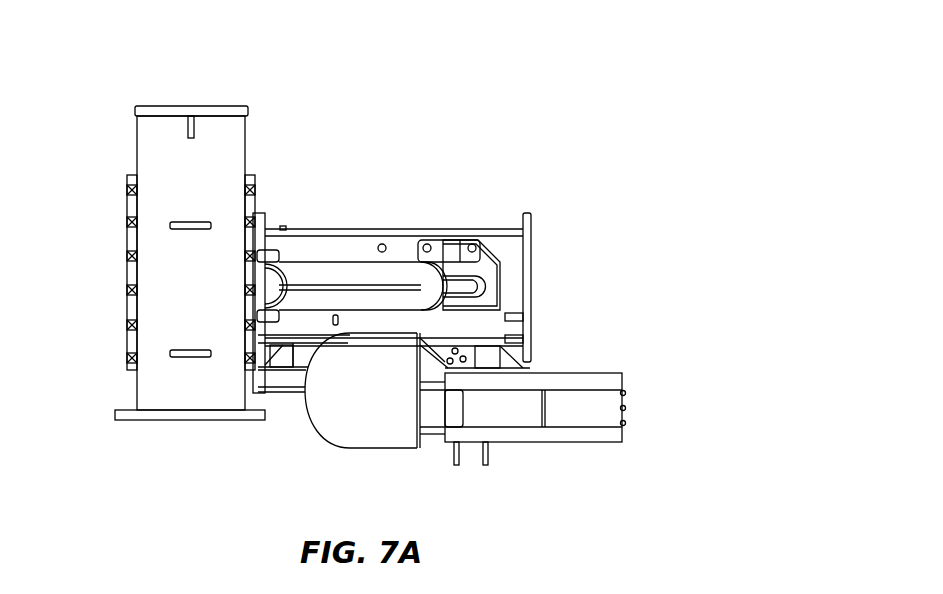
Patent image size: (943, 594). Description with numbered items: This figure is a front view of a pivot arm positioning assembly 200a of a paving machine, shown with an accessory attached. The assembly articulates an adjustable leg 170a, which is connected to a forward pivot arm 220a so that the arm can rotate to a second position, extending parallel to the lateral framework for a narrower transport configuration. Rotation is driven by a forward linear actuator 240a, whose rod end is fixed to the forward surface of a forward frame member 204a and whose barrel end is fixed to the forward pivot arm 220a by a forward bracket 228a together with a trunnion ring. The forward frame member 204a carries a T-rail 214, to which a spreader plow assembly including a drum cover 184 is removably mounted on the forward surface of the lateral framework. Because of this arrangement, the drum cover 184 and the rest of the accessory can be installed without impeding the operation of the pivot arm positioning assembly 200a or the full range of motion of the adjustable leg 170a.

The pivot arm positioning assembly 200a is at (523, 90).
The adjustable leg 170a is at (164, 168).
The forward pivot arm 220a is at (130, 238).
The forward bracket 228a is at (265, 248).
The forward linear actuator 240a is at (393, 270).
The forward frame member 204a is at (532, 260).
The T-rail 214 is at (285, 398).
The drum cover 184 is at (345, 448).